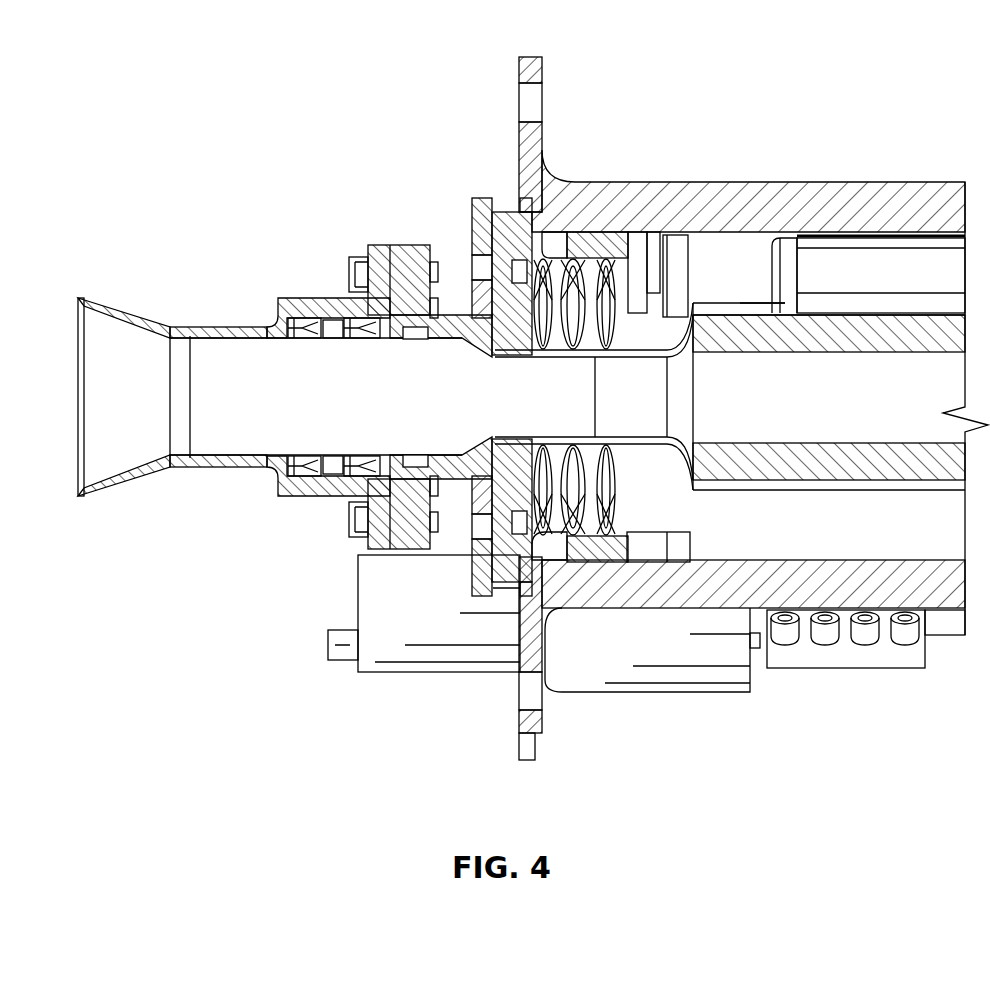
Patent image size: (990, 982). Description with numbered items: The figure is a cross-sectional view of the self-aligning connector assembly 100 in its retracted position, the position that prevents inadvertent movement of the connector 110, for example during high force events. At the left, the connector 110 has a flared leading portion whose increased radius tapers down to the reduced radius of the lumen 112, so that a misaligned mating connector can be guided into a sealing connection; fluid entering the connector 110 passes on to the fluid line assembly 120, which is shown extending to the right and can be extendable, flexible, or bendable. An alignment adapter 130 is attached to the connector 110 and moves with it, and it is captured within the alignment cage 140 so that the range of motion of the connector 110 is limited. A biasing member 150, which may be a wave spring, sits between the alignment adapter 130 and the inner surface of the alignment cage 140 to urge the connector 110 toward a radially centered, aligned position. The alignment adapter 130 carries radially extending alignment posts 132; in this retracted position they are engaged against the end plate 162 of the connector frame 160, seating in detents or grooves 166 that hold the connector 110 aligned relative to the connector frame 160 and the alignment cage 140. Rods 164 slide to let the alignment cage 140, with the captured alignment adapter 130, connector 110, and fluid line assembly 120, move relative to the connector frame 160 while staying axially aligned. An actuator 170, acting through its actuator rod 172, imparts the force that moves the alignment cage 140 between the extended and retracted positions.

The self-aligning connector assembly 100 is at (892, 78).
The connector 110 is at (212, 328).
The lumen 112 is at (102, 394).
The fluid line assembly 120 is at (906, 322).
The alignment adapter 130 is at (412, 258).
The alignment posts 132 is at (515, 222).
The alignment cage 140 is at (478, 200).
The biasing member 150 is at (608, 248).
The connector frame 160 is at (918, 202).
The end plate 162 is at (532, 728).
The rods 164 is at (820, 264).
The grooves 166 is at (545, 228).
The actuator 170 is at (410, 652).
The actuator rod 172 is at (940, 627).